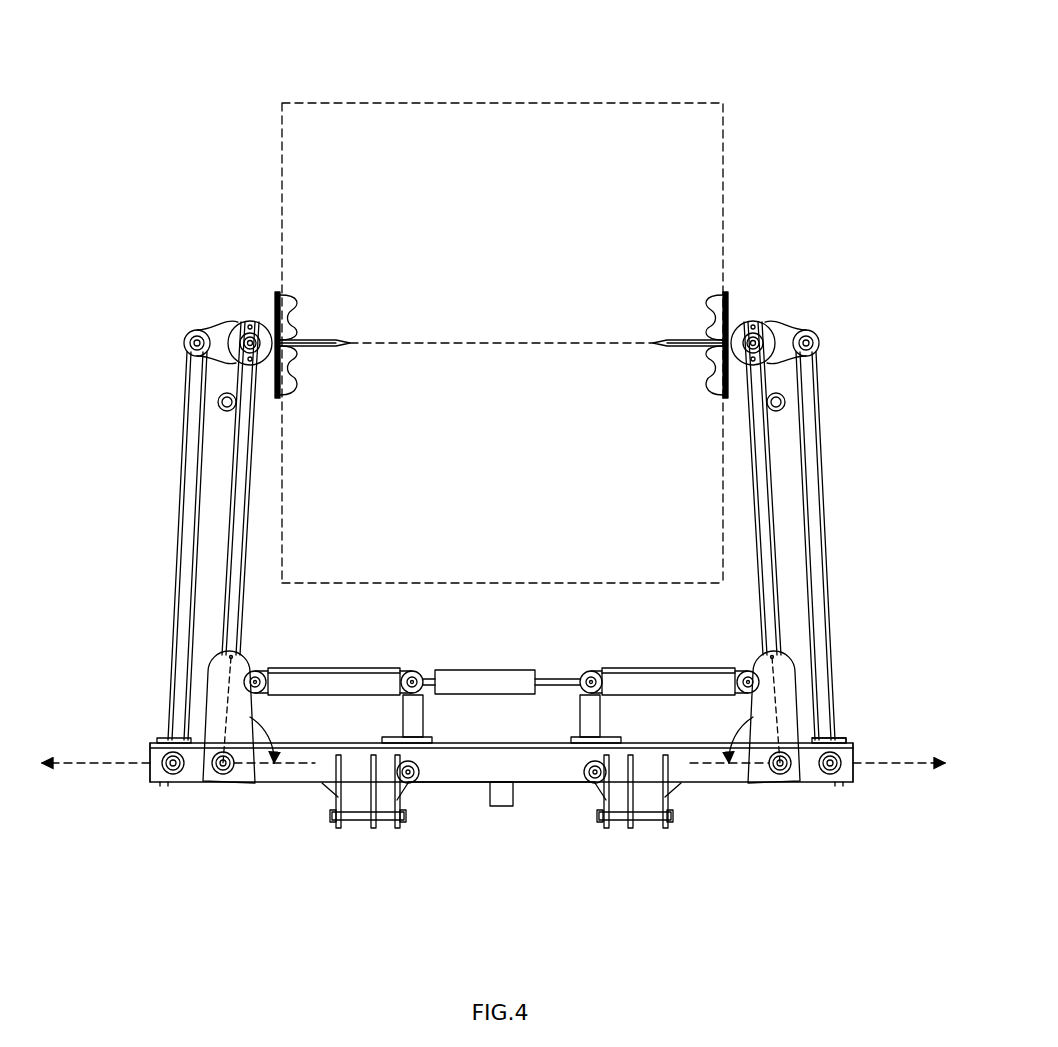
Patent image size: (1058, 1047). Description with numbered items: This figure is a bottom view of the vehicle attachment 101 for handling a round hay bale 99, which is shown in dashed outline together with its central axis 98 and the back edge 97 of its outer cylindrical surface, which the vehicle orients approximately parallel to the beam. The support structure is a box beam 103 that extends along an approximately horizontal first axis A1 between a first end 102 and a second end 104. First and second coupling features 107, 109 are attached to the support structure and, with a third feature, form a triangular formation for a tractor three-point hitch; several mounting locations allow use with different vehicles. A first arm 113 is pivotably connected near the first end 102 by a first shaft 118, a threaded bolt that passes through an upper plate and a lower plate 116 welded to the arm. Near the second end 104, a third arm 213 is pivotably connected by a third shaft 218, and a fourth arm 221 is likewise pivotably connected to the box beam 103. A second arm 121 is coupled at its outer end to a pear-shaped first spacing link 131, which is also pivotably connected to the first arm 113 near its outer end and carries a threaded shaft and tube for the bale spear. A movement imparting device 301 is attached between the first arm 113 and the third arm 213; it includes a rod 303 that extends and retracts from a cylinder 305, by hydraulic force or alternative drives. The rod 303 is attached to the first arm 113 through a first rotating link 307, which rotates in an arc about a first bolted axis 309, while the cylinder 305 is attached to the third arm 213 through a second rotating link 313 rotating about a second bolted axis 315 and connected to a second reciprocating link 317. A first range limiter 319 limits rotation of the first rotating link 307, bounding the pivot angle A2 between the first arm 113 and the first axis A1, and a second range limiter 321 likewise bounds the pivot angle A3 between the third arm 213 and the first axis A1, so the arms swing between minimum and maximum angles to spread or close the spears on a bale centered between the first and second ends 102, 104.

The vehicle attachment 101 is at (830, 206).
The round hay bale 99 is at (478, 108).
The central axis 98 is at (473, 338).
The back edge 97 is at (402, 582).
The box beam 103 is at (448, 783).
The second end 104 is at (148, 772).
The first end 102 is at (855, 772).
The first axis A1 is at (88, 763).
The pivot angle A2 is at (767, 713).
The pivot angle A3 is at (236, 713).
The third shaft 218 is at (225, 785).
The first shaft 118 is at (782, 785).
The lower plate 116 is at (800, 738).
The fourth arm 221 is at (183, 520).
The third arm 213 is at (252, 522).
The second arm 121 is at (818, 498).
The first arm 113 is at (758, 512).
The first spacing link 131 is at (764, 324).
The movement imparting device 301 is at (515, 636).
The second reciprocating link 317 is at (340, 670).
The cylinder 305 is at (448, 668).
The first rotating link 307 is at (585, 704).
The rod 303 is at (566, 670).
The second rotating link 313 is at (420, 712).
The second range limiter 321 is at (395, 728).
The first range limiter 319 is at (610, 725).
The second bolted axis 315 is at (412, 785).
The first bolted axis 309 is at (597, 783).
The second coupling feature 109 is at (375, 832).
The first coupling feature 107 is at (628, 832).